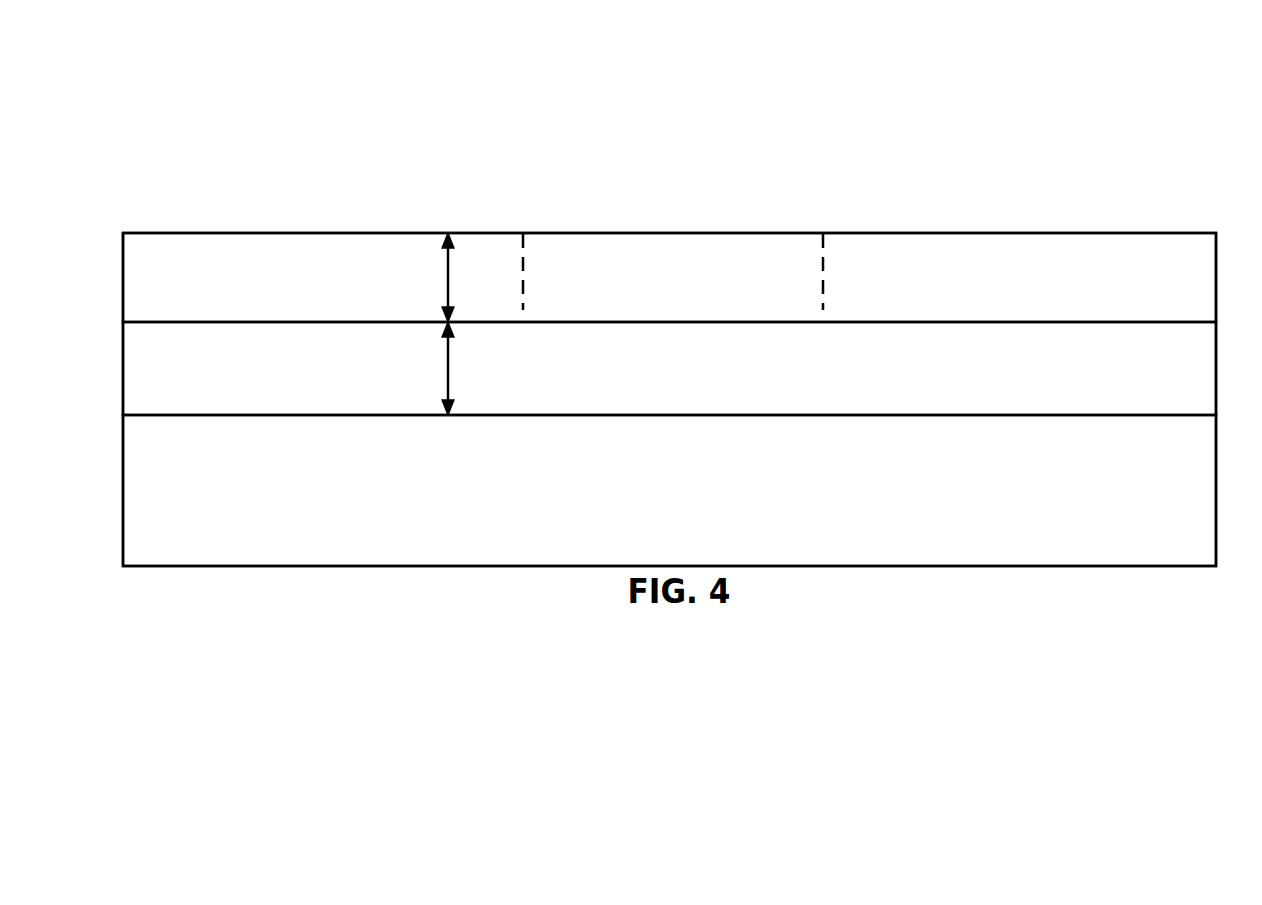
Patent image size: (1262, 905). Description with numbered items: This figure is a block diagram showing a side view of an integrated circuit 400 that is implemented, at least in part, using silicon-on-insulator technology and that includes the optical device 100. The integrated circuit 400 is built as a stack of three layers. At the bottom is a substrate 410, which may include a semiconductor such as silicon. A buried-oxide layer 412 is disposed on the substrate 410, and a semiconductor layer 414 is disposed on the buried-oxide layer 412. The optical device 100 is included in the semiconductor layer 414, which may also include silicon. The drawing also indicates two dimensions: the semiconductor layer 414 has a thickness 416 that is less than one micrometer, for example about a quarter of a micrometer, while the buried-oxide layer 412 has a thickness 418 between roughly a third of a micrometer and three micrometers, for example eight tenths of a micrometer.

The integrated circuit 400 is at (1072, 88).
The semiconductor layer 414 is at (1174, 300).
The buried-oxide layer 412 is at (1174, 390).
The substrate 410 is at (688, 511).
The optical device 100 is at (657, 299).
The thickness 416 is at (447, 290).
The thickness 418 is at (447, 383).